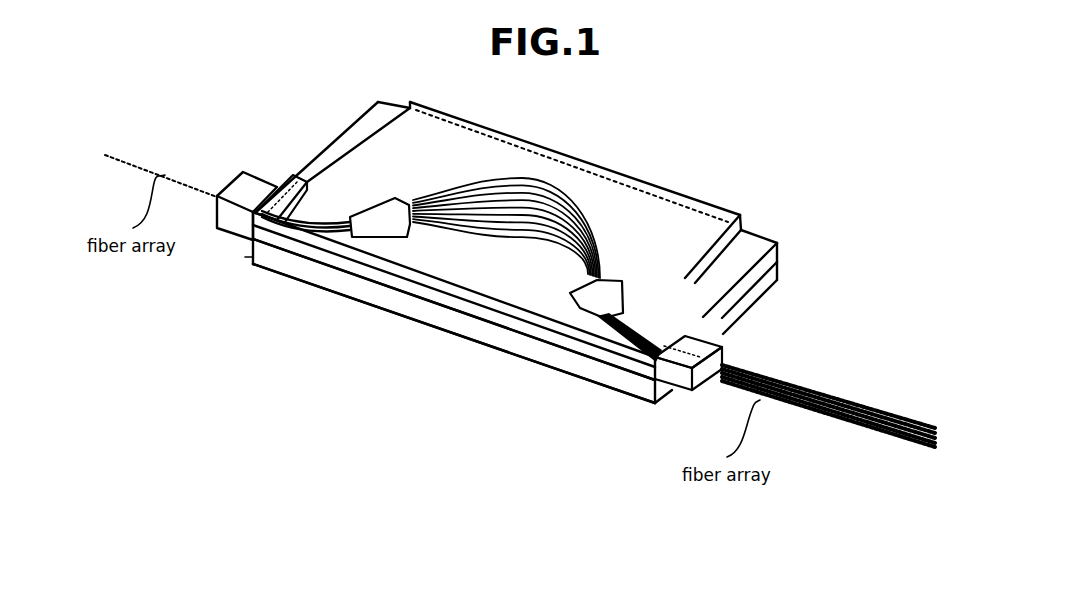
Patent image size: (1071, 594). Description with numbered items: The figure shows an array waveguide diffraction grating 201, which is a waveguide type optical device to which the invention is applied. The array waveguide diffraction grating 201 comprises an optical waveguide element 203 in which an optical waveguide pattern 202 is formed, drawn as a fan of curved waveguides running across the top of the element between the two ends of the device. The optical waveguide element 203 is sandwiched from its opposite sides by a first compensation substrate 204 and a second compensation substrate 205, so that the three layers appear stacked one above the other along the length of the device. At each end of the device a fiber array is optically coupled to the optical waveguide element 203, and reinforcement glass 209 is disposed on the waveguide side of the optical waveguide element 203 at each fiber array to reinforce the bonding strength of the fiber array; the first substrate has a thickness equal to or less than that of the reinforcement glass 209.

The array waveguide diffraction grating 201 is at (555, 343).
The optical waveguide pattern 202 is at (607, 243).
The optical waveguide element 203 is at (778, 247).
The first compensation substrate 204 is at (742, 218).
The second compensation substrate 205 is at (778, 270).
The reinforcement glass 209 is at (296, 177).